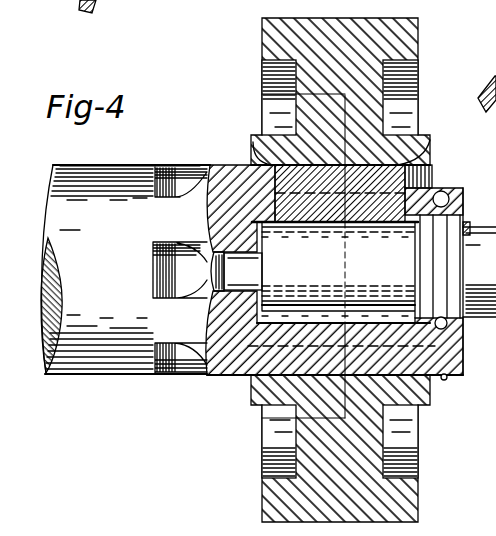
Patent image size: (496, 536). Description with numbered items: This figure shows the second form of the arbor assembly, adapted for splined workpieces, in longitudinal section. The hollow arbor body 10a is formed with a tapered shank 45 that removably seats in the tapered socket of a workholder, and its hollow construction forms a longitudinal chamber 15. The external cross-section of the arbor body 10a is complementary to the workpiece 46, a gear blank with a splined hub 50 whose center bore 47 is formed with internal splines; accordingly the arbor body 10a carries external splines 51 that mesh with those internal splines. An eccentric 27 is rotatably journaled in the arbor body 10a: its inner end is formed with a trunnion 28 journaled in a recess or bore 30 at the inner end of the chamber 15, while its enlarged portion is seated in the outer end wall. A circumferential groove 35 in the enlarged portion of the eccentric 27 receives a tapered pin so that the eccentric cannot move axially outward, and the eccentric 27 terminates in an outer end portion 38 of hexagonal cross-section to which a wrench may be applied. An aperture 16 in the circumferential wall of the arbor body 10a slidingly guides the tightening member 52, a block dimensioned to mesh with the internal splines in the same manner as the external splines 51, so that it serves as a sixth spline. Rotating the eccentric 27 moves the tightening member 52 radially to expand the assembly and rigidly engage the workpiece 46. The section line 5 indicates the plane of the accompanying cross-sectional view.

The section line 5- 5 is at (262, 418).
The arbor body 10a is at (205, 379).
The longitudinal chamber 15 is at (266, 322).
The aperture 16 is at (339, 91).
The eccentric 27 is at (346, 277).
The trunnion 28 is at (245, 262).
The recess or bore 30 is at (223, 275).
The circumferential groove 35 is at (433, 248).
The outer end portion 38 is at (489, 215).
The tapered shank 45 is at (119, 156).
The workpiece 46 is at (262, 440).
The center bore 47 is at (444, 381).
The splined hub 50 is at (424, 135).
The external splines 51 is at (190, 217).
The tightening member 52 is at (433, 152).